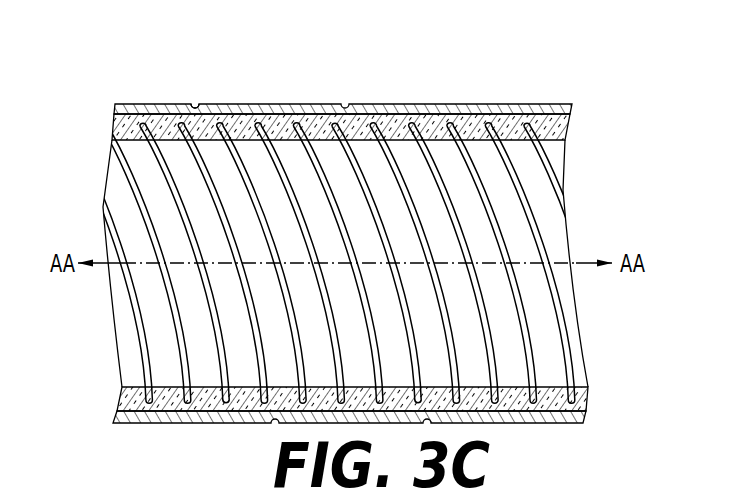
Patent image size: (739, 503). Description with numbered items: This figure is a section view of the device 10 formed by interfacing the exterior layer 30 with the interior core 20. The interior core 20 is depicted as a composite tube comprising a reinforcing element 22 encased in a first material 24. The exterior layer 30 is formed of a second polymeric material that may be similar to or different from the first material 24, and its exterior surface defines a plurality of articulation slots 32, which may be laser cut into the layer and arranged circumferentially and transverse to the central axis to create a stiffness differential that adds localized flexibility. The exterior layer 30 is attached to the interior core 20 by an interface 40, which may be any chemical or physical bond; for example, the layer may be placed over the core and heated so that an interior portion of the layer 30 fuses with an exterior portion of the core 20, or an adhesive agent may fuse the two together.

The device 10 is at (375, 246).
The interior core 20 is at (113, 127).
The reinforcing element 22 is at (553, 292).
The first material 24 is at (540, 402).
The exterior layer 30 is at (162, 103).
The articulation slots 32 is at (196, 101).
The interface 40 is at (572, 103).